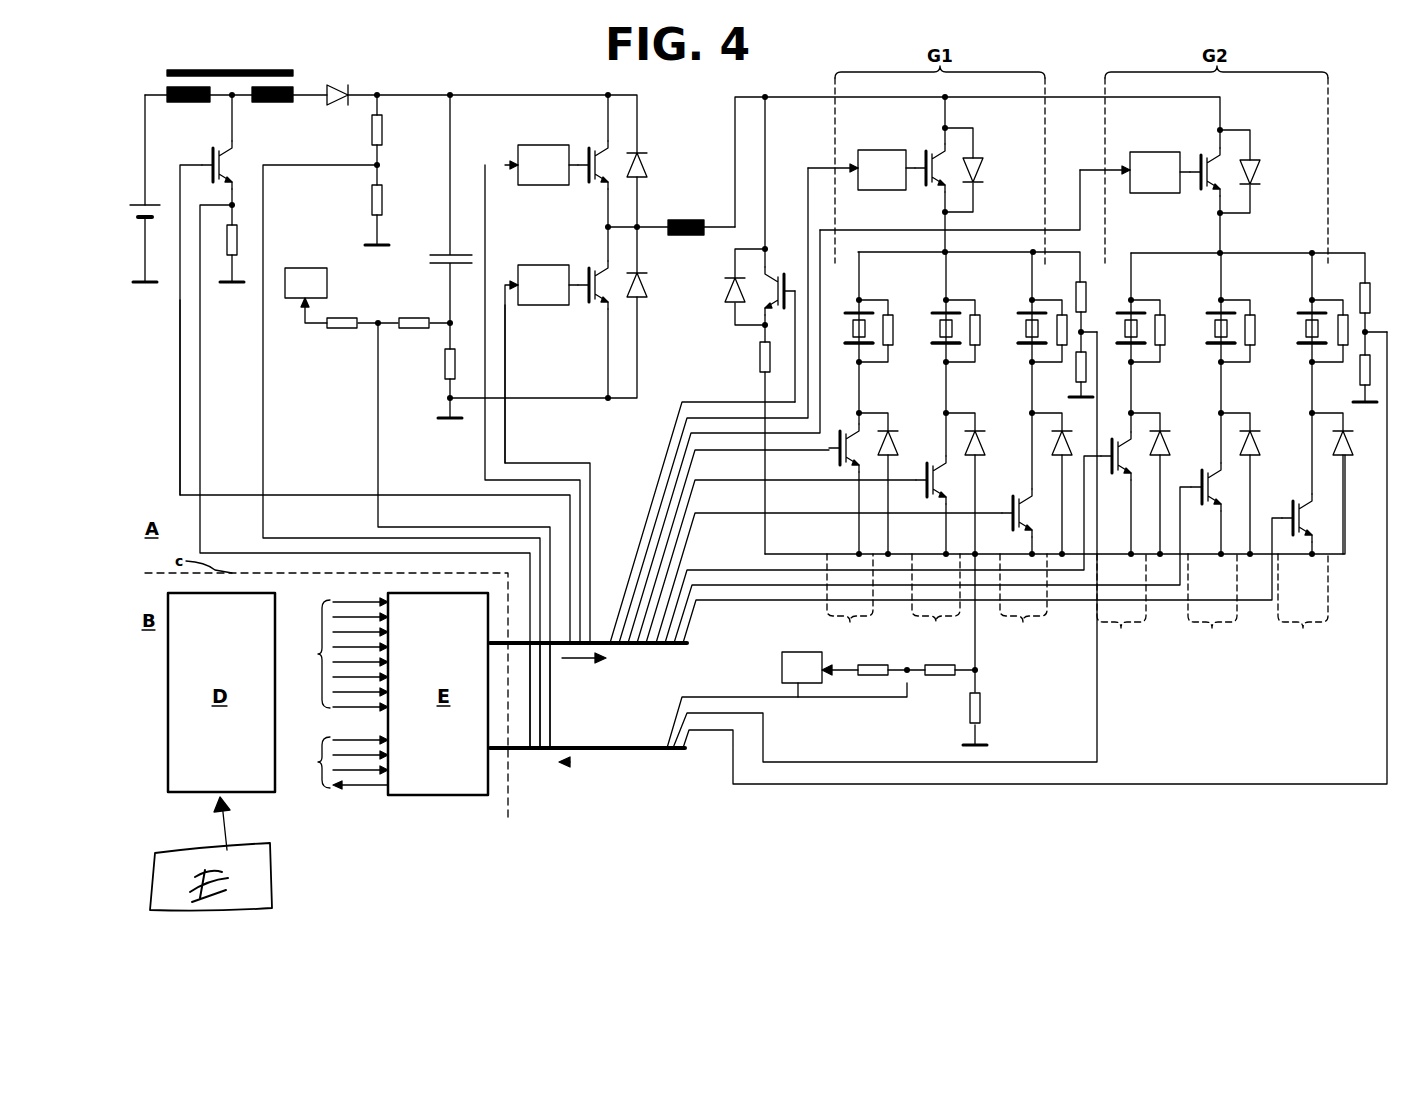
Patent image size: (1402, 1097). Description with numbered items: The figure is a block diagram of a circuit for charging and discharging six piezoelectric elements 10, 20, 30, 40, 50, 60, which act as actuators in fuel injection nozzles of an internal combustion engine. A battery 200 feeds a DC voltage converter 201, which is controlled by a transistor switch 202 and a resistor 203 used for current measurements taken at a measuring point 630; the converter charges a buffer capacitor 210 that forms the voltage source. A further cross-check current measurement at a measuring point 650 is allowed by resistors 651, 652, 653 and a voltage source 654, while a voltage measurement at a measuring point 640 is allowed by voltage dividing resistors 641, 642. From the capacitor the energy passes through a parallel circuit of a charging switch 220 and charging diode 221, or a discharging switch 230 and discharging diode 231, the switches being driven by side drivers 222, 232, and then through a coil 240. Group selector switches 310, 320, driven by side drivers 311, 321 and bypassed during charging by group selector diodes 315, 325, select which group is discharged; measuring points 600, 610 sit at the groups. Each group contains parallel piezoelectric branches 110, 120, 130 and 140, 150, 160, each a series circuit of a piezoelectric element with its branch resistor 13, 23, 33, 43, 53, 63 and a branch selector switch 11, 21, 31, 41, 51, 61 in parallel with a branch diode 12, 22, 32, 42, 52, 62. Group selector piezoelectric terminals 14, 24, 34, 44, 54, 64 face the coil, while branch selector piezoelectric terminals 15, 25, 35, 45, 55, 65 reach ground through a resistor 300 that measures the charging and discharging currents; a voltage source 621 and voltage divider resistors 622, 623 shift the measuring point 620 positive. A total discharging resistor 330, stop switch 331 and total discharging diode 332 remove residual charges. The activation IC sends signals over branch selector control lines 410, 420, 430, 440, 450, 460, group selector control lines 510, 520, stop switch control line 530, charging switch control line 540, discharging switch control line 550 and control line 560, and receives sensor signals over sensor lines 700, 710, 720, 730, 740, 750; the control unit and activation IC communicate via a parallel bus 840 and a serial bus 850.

The DC voltage converter 201 is at (222, 68).
The battery 200 is at (158, 202).
The transistor switch 202 is at (217, 165).
The resistor 203 is at (238, 240).
The measuring point 630 is at (240, 205).
The voltage source 654 is at (306, 268).
The measuring point 650 is at (378, 318).
The resistor 652 is at (342, 328).
The resistor 653 is at (414, 328).
The resistor 651 is at (445, 364).
The buffer capacitor 210 is at (425, 262).
The measuring point 640 is at (385, 165).
The voltage dividing resistor 641 is at (387, 128).
The voltage dividing resistor 642 is at (387, 195).
The side driver 222 is at (540, 145).
The charging switch 220 is at (588, 152).
The charging diode 221 is at (648, 164).
The coil 240 is at (688, 220).
The side driver 232 is at (540, 265).
The discharging switch 230 is at (588, 272).
The discharging diode 231 is at (648, 290).
The charging switch control line 540 is at (485, 450).
The discharging switch control line 550 is at (508, 436).
The control line 560 is at (178, 475).
The total discharging diode 332 is at (725, 290).
The stop switch 331 is at (784, 276).
The total discharging resistor 330 is at (758, 357).
The side driver 311 is at (880, 150).
The group selector switch 310 is at (926, 156).
The group selector diode 315 is at (987, 170).
The side driver 321 is at (1152, 152).
The group selector switch 320 is at (1201, 158).
The group selector diode 325 is at (1264, 170).
The measuring point 600 is at (1078, 283).
The measuring point 610 is at (1371, 285).
The piezoelectric element 10 is at (847, 325).
The branch selector switch 11 is at (836, 460).
The branch diode 12 is at (898, 443).
The branch resistor 13 is at (894, 330).
The group selector piezoelectric terminal 14 is at (875, 299).
The branch selector piezoelectric terminal 15 is at (849, 343).
The piezoelectric element 20 is at (934, 326).
The branch selector switch 21 is at (923, 472).
The branch diode 22 is at (985, 443).
The branch resistor 23 is at (981, 330).
The group selector piezoelectric terminal 24 is at (962, 299).
The branch selector piezoelectric terminal 25 is at (936, 343).
The piezoelectric element 30 is at (1020, 326).
The branch selector switch 31 is at (1009, 513).
The branch diode 32 is at (1072, 443).
The branch resistor 33 is at (1066, 345).
The group selector piezoelectric terminal 34 is at (1050, 299).
The branch selector piezoelectric terminal 35 is at (1022, 343).
The piezoelectric element 40 is at (1119, 326).
The branch selector switch 41 is at (1120, 470).
The branch diode 42 is at (1170, 443).
The branch resistor 43 is at (1167, 330).
The group selector piezoelectric terminal 44 is at (1149, 299).
The branch selector piezoelectric terminal 45 is at (1121, 343).
The piezoelectric element 50 is at (1209, 326).
The branch selector switch 51 is at (1198, 478).
The branch diode 52 is at (1262, 443).
The branch resistor 53 is at (1257, 330).
The group selector piezoelectric terminal 54 is at (1239, 299).
The branch selector piezoelectric terminal 55 is at (1210, 343).
The piezoelectric element 60 is at (1300, 326).
The branch selector switch 61 is at (1289, 518).
The branch diode 62 is at (1353, 447).
The branch resistor 63 is at (1348, 345).
The group selector piezoelectric terminal 64 is at (1330, 300).
The branch selector piezoelectric terminal 65 is at (1301, 343).
The piezoelectric branch 110 is at (850, 603).
The piezoelectric branch 120 is at (936, 603).
The piezoelectric branch 130 is at (1023, 603).
The piezoelectric branch 140 is at (1121, 604).
The piezoelectric branch 150 is at (1212, 605).
The piezoelectric branch 160 is at (1303, 605).
The stop switch control line 530 is at (680, 425).
The group selector control line 510 is at (676, 453).
The group selector control line 520 is at (671, 480).
The branch selector control line 410 is at (668, 507).
The branch selector control line 420 is at (665, 532).
The branch selector control line 430 is at (664, 572).
The branch selector control line 440 is at (720, 572).
The branch selector control line 450 is at (764, 587).
The branch selector control line 460 is at (806, 602).
The sensor line 730 is at (552, 677).
The sensor line 740 is at (542, 703).
The sensor line 750 is at (532, 728).
The sensor line 720 is at (675, 726).
The sensor line 700 is at (1097, 745).
The sensor line 710 is at (1385, 742).
The voltage source 621 is at (800, 683).
The voltage divider resistor 622 is at (874, 678).
The measuring point 620 is at (905, 665).
The voltage divider resistor 623 is at (942, 678).
The resistor 300 is at (980, 712).
The parallel bus 840 is at (334, 654).
The serial bus 850 is at (334, 762).